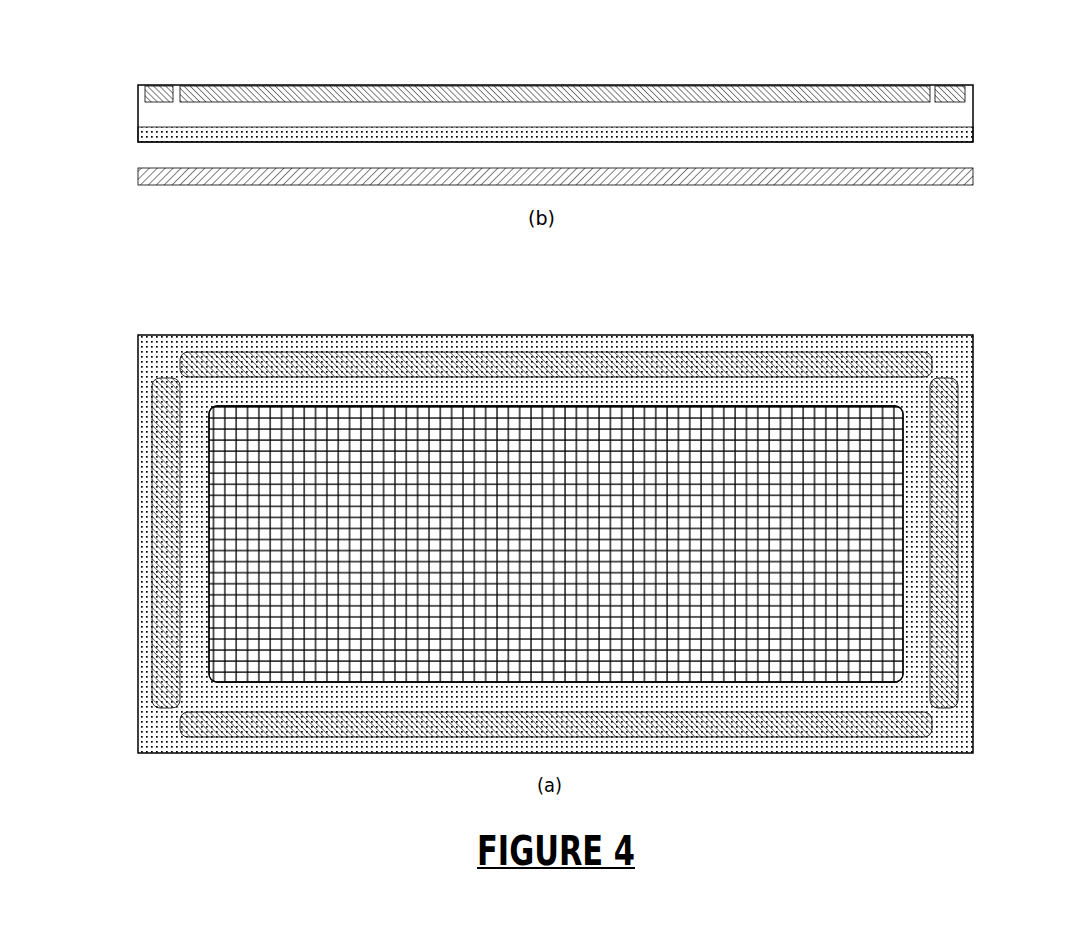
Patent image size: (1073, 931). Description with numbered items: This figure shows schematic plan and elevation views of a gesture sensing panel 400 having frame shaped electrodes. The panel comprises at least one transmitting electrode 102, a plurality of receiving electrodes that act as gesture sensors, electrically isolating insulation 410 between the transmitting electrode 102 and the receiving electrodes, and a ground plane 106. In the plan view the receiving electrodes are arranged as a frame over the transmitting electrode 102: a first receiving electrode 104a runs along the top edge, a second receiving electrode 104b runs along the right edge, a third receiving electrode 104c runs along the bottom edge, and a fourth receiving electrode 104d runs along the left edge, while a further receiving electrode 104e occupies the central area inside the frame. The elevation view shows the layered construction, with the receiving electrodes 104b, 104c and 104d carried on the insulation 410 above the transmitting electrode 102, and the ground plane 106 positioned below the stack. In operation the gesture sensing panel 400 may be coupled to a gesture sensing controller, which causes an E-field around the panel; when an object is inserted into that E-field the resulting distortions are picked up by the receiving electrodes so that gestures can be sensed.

The gesture sensing panel 400 is at (405, 233).
The electrically isolating insulation 410 is at (138, 113).
The transmitting electrode 102 is at (973, 128).
The receiving electrode 104a is at (668, 357).
The receiving electrode 104b is at (951, 85).
The receiving electrode 104c is at (706, 85).
The receiving electrode 104d is at (162, 84).
The receiving electrode 104e is at (586, 547).
The ground plane 106 is at (180, 184).